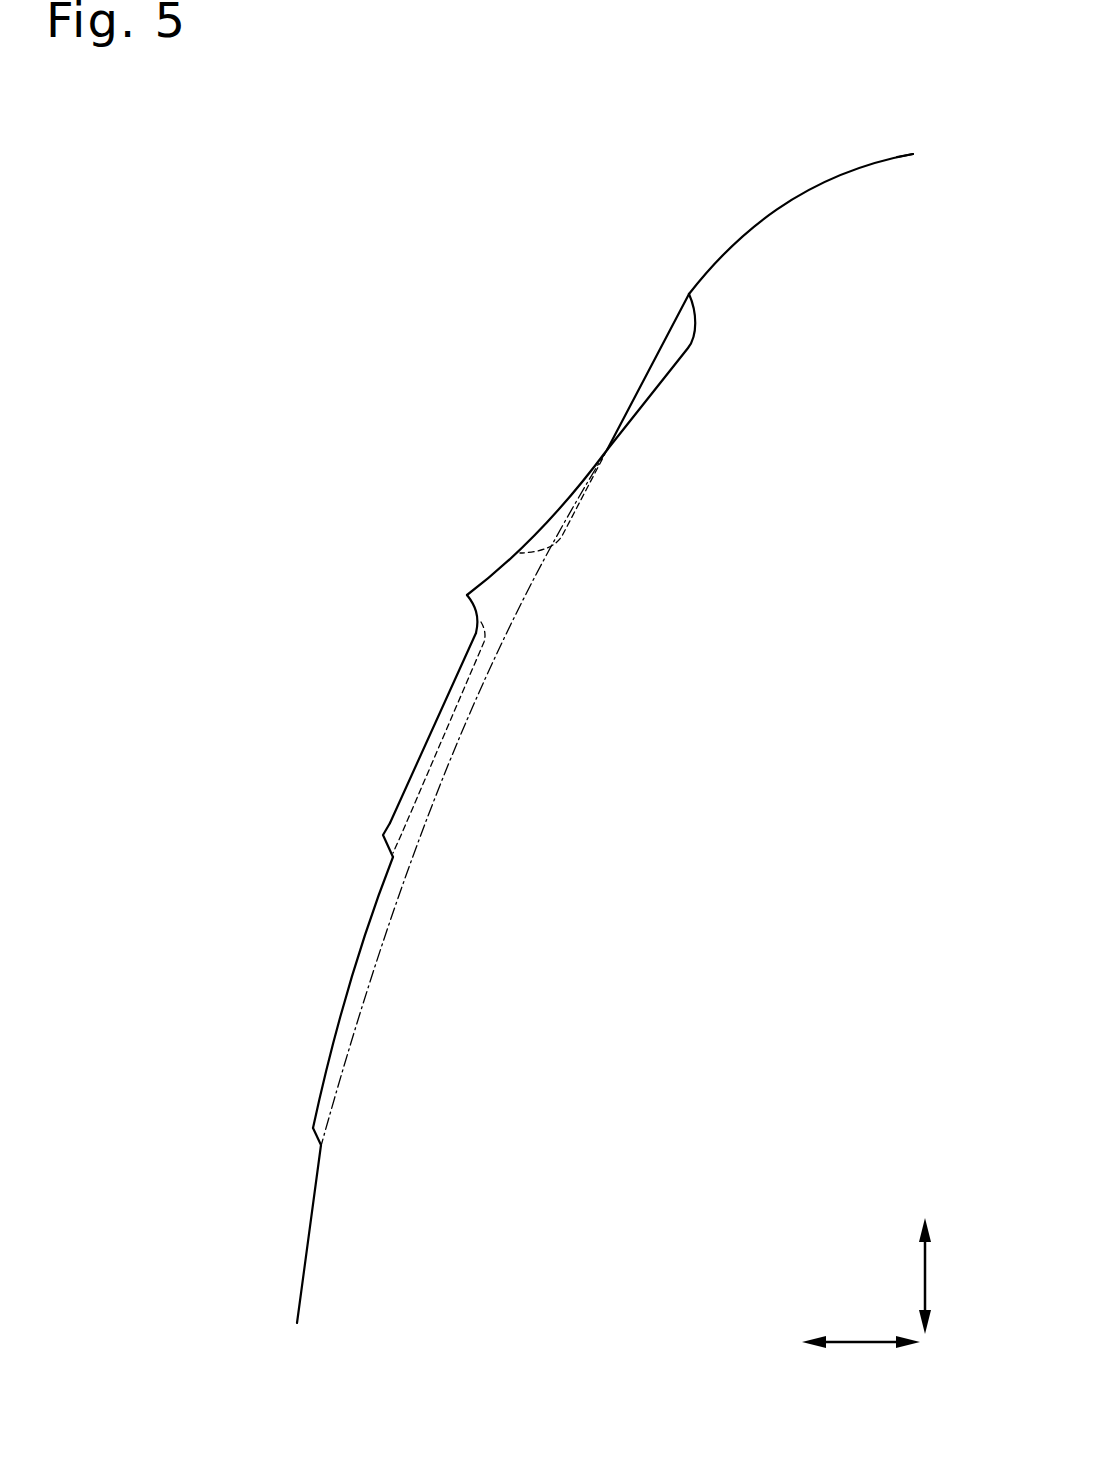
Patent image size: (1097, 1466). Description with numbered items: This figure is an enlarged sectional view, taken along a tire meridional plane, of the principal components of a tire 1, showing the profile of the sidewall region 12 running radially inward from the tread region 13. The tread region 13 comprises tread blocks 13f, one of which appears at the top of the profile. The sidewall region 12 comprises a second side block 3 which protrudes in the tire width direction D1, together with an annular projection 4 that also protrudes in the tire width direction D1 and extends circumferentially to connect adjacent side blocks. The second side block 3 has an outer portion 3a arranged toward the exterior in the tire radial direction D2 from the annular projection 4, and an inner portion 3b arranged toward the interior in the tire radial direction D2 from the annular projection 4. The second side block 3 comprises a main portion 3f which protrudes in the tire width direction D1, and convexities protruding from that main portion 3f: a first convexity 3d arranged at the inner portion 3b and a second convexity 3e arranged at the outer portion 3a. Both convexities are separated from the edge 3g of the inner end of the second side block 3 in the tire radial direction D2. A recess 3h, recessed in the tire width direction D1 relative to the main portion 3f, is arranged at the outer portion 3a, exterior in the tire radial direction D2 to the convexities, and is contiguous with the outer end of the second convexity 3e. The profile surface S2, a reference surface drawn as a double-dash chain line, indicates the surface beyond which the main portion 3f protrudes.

The tire 1 is at (143, 143).
The sidewall region 12 is at (307, 538).
The tread region 13 is at (843, 155).
The tread block 13f is at (895, 152).
The second side block 3 is at (447, 672).
The outer portion 3a is at (630, 395).
The recess 3h is at (670, 340).
The second convexity 3e is at (557, 508).
The annular projection 4 is at (467, 592).
The first convexity 3d is at (420, 748).
The main portion 3f is at (405, 811).
The inner portion 3b is at (352, 970).
The edge of inner end 3g is at (320, 1147).
The profile surface S2 is at (332, 1102).
The tire width direction D1 is at (861, 1354).
The tire radial direction D2 is at (938, 1276).